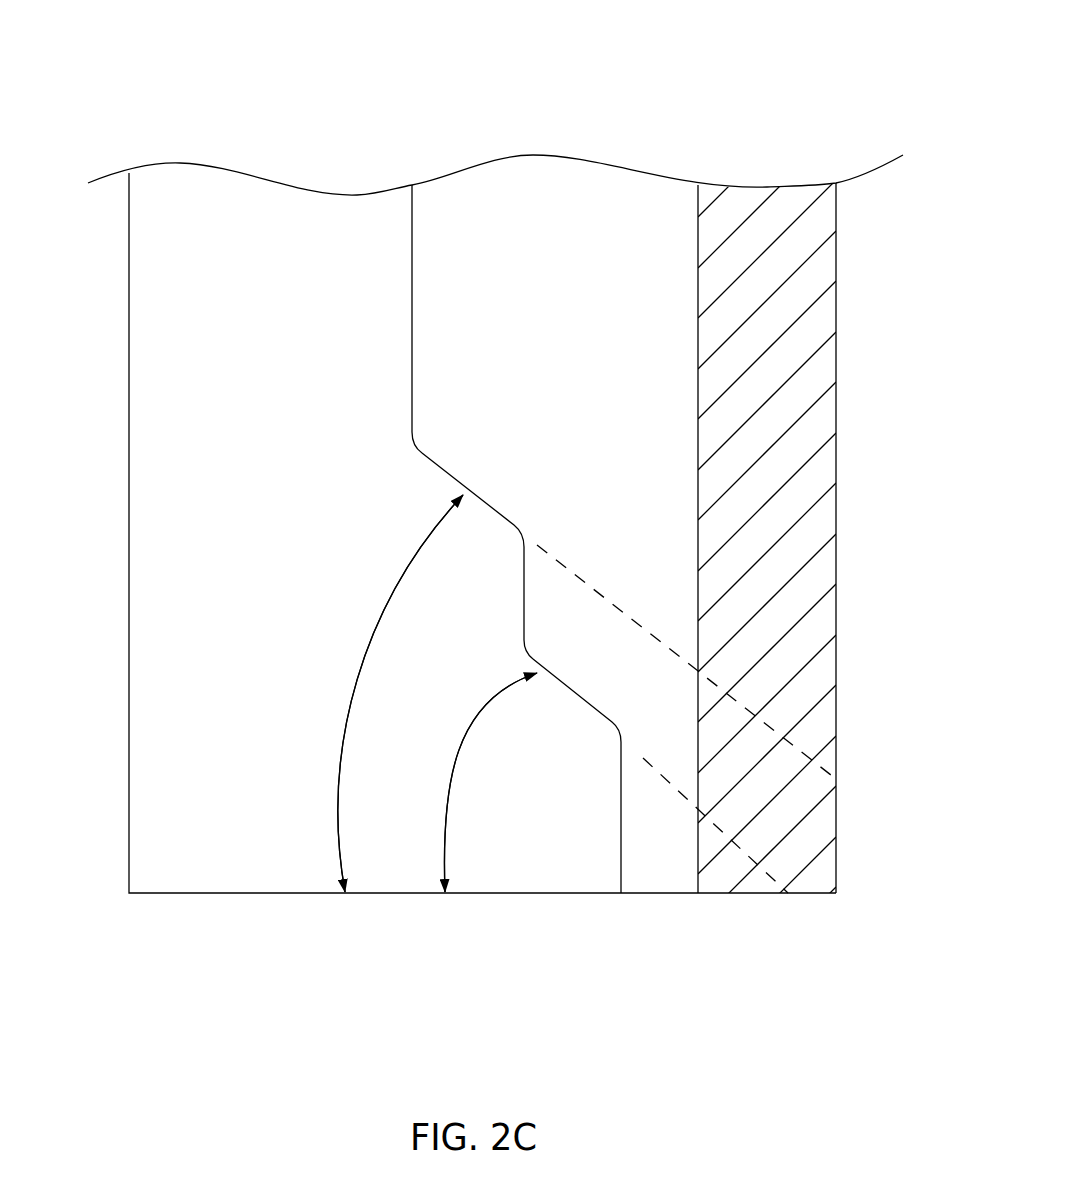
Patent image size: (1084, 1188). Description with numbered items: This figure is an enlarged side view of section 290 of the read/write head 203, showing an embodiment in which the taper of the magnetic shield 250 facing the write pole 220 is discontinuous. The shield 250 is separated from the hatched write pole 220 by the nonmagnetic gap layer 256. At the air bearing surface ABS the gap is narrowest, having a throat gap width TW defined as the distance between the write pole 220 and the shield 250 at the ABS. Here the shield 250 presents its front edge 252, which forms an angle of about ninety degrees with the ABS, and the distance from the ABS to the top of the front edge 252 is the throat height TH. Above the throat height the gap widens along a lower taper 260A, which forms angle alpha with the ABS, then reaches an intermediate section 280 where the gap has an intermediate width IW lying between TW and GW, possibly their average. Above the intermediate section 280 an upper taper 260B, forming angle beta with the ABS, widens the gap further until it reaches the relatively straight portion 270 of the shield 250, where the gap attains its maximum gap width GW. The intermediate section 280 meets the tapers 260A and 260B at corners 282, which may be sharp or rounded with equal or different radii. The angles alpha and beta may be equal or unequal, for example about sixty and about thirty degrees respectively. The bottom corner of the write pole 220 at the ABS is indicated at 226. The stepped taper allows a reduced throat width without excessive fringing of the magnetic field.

The section 290 is at (372, 88).
The write pole / yoke region 203 is at (112, 523).
The relatively straight portion 270 is at (411, 355).
The nonmagnetic gap layer 256 is at (568, 354).
The taper 260B is at (446, 472).
The intermediate section 280 is at (522, 561).
The corners 282 is at (528, 652).
The taper 260A is at (573, 705).
The front edge 252 is at (620, 832).
The magnetic shield 250 is at (277, 836).
The write pole 220 is at (823, 450).
The shield bottom edge / corner 226 is at (757, 893).
The air bearing surface ABS is at (530, 908).
The maximum gap width GW is at (697, 428).
The intermediate width IW is at (697, 583).
The throat gap width TW is at (742, 934).
The throat height TH is at (892, 774).
The angle α alpha is at (452, 787).
The angle β beta is at (357, 677).